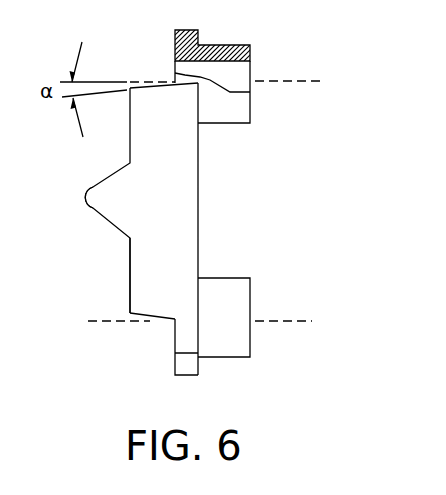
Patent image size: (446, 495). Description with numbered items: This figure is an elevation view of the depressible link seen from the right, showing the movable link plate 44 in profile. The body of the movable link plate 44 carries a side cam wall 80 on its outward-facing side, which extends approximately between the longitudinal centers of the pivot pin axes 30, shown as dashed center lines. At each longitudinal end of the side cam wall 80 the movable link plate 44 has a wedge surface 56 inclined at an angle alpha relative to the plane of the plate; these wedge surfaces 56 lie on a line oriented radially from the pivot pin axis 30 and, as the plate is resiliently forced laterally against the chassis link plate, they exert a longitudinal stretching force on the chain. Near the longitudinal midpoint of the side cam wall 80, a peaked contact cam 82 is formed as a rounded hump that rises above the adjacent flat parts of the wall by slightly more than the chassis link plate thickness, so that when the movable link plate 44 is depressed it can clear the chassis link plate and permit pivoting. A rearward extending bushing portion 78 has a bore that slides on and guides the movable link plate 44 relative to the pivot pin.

The pivot pin axis 30 is at (283, 80).
The movable link plate 44 is at (180, 237).
The wedge surface 56 is at (153, 84).
The bushing portion 78 is at (228, 348).
The side cam wall 80 is at (128, 272).
The peaked contact cam 82 is at (88, 202).